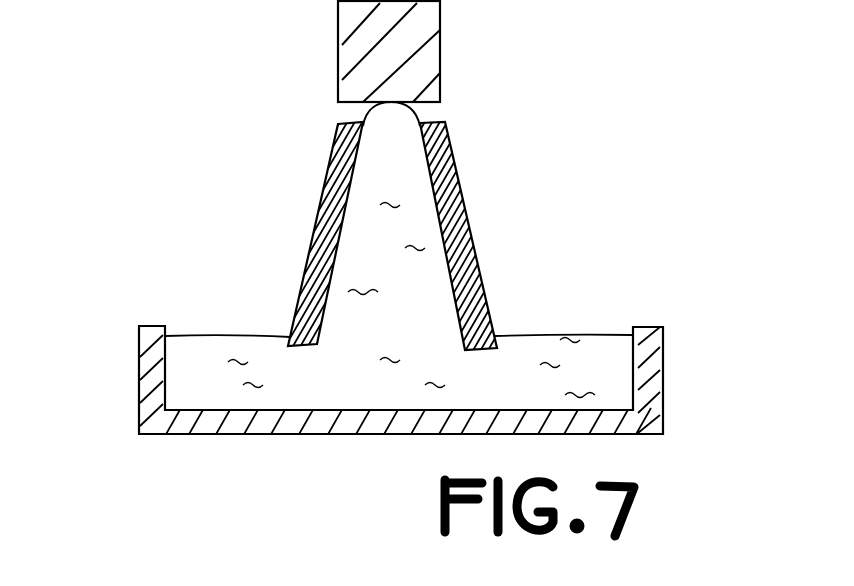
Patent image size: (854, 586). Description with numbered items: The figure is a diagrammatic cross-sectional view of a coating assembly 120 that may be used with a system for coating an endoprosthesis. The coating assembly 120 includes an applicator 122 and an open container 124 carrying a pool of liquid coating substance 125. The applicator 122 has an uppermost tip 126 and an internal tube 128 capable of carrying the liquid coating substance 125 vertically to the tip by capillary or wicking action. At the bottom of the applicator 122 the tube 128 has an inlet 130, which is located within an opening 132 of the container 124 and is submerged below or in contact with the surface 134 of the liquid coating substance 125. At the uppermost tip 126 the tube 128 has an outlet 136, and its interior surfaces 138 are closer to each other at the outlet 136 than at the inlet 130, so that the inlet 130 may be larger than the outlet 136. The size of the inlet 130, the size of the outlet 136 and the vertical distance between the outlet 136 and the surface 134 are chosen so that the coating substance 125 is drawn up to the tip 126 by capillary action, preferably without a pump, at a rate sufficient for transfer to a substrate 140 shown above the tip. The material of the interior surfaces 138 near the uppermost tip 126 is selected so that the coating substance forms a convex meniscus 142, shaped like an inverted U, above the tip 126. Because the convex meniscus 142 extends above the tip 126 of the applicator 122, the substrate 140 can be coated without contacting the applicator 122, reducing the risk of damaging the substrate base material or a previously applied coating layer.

The coating assembly 120 is at (648, 112).
The applicator 122 is at (465, 206).
The open container 124 is at (663, 349).
The liquid coating substance 125 is at (603, 327).
The uppermost tip 126 is at (437, 122).
The internal tube 128 is at (400, 172).
The inlet 130 is at (348, 358).
The opening 132 is at (240, 322).
The surface 134 is at (197, 336).
The outlet 136 is at (388, 128).
The interior surfaces 138 is at (342, 223).
The substrate 140 is at (337, 22).
The convex meniscus 142 is at (343, 112).